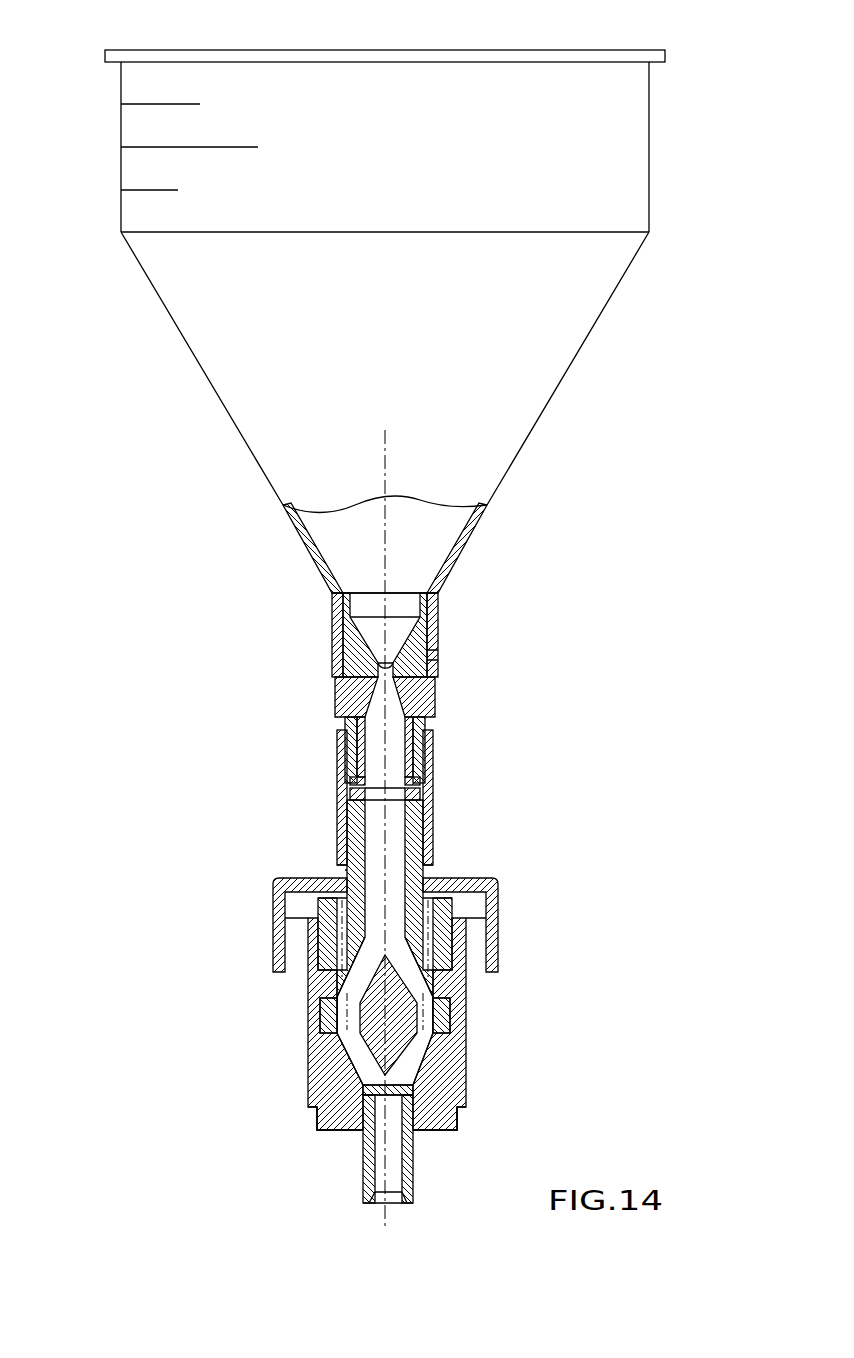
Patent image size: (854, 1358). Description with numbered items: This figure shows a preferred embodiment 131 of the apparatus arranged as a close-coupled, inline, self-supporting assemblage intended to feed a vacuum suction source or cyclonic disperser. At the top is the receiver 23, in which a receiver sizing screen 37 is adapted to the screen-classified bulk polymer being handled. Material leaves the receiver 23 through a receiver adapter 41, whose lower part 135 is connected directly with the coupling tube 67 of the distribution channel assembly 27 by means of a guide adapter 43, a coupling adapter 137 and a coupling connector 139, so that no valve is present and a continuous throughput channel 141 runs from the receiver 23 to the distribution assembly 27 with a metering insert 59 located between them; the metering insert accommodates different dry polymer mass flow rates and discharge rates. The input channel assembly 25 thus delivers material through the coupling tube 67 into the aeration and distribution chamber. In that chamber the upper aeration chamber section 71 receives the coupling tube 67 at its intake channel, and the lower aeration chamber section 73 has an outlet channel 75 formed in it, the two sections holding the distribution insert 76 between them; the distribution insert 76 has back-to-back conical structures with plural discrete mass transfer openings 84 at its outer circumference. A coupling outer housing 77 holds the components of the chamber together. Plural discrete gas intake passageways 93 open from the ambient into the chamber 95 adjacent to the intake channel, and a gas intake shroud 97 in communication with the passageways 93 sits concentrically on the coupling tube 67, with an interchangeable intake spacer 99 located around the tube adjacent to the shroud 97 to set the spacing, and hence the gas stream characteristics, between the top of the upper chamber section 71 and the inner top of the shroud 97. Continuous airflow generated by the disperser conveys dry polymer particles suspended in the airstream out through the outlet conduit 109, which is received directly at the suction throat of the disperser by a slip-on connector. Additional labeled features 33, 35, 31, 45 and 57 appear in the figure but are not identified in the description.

The receiver 23 is at (146, 404).
The graduation marks 33 is at (175, 90).
The receiver sizing screen 37 is at (562, 231).
The conical wall 35 is at (508, 428).
The preferred embodiment 131 is at (600, 506).
The input channel assembly 25 is at (601, 635).
The nozzle housing 45 is at (342, 622).
The receiver adapter 41 is at (441, 625).
The outlet opening 31 is at (440, 605).
The seal 57 is at (438, 657).
The metering insert 59 is at (337, 697).
The throughput channel 141 is at (430, 688).
The guide adapter 43 is at (340, 722).
The lower part of receiver adapter 135 is at (430, 725).
The coupling adapter 137 is at (340, 822).
The coupling connector 139 is at (432, 793).
The particulate matter input channel coupling tube 67 is at (436, 864).
The intake spacer 99 is at (340, 870).
The gas intake shroud 97 is at (500, 945).
The upper aeration chamber section 71 is at (320, 912).
The gas intake passageways 93 is at (338, 950).
The coupling outer housing 77 is at (466, 1020).
The chamber 95 is at (336, 992).
The mass transfer openings 84 is at (325, 1015).
The distribution insert 76 is at (397, 1052).
The distribution channel assembly 27 is at (280, 1081).
The lower aeration chamber section 73 is at (458, 1118).
The outlet channel 75 is at (440, 1130).
The outlet conduit 109 is at (363, 1140).